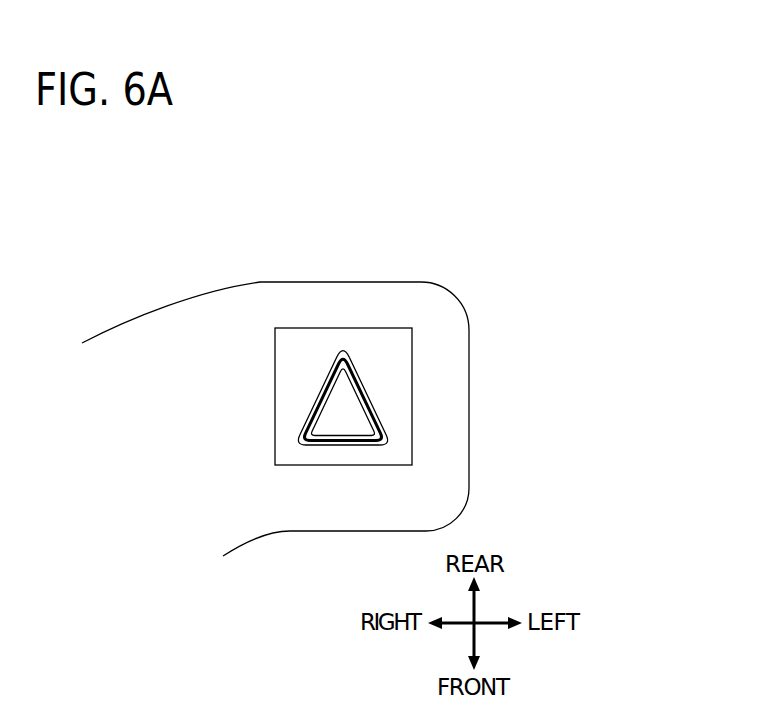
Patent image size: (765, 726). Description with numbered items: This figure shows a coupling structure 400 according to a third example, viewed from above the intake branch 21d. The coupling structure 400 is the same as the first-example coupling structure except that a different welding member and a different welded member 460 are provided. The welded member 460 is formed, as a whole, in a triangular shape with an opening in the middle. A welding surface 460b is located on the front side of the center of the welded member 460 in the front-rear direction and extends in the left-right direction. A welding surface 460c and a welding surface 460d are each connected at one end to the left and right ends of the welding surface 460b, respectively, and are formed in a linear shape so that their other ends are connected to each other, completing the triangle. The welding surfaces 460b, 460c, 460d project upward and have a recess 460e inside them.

The coupling structure 400 is at (356, 172).
The intake branch 21d is at (173, 303).
The welded member 460 is at (323, 328).
The welding surface 460b is at (349, 446).
The welding surface 460c is at (375, 402).
The welding surface 460d is at (305, 406).
The recess 460e is at (368, 382).